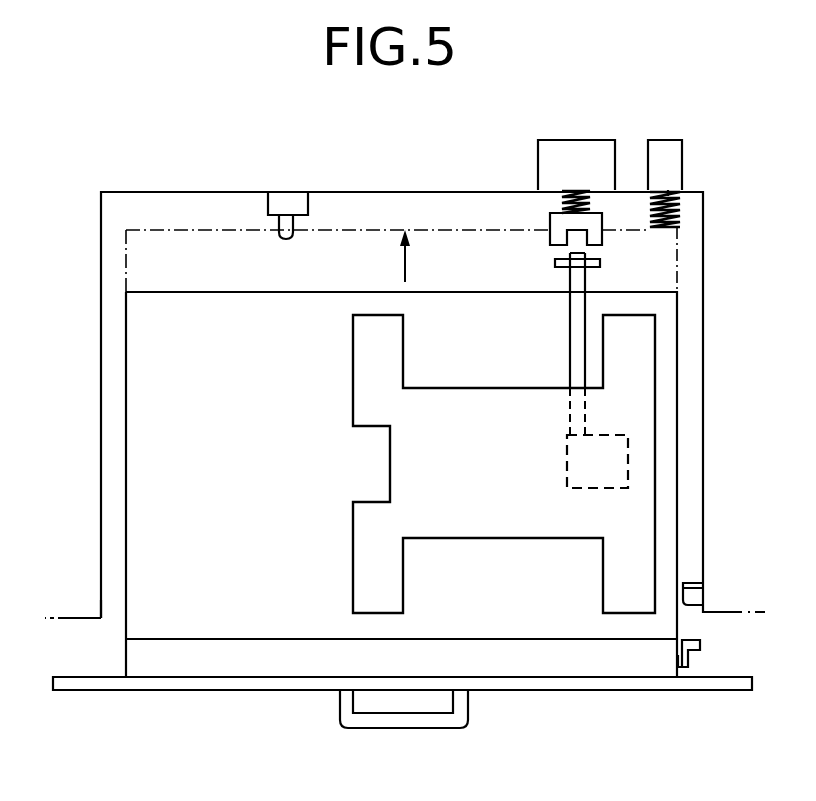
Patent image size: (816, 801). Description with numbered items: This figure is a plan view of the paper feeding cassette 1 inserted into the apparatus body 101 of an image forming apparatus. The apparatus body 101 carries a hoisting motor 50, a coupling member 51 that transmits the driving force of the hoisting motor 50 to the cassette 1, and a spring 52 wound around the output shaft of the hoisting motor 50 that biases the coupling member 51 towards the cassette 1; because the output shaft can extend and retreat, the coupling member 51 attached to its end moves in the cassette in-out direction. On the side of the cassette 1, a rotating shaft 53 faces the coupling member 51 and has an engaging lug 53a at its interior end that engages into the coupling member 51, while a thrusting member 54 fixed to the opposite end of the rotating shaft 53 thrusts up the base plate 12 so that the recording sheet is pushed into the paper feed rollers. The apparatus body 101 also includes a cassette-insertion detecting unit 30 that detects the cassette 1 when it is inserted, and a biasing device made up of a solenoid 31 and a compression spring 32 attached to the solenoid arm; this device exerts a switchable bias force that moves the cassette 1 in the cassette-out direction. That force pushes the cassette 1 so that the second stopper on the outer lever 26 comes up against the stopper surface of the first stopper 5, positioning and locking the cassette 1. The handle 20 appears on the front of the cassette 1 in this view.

The cassette 1 is at (230, 691).
The apparatus body 101 is at (85, 600).
The handle 20 is at (398, 729).
The cassette-insertion detecting unit 30 is at (286, 200).
The solenoid 31 is at (670, 154).
The compression spring 32 is at (684, 204).
The hoisting motor 50 is at (555, 148).
The coupling member 51 is at (552, 242).
The spring 52 is at (562, 197).
The rotating shaft 53 is at (578, 343).
The engaging lug 53a is at (601, 263).
The thrusting member 54 is at (578, 482).
The base plate 12 is at (483, 510).
The first stopper 5 is at (697, 595).
The outer lever 26 is at (701, 651).